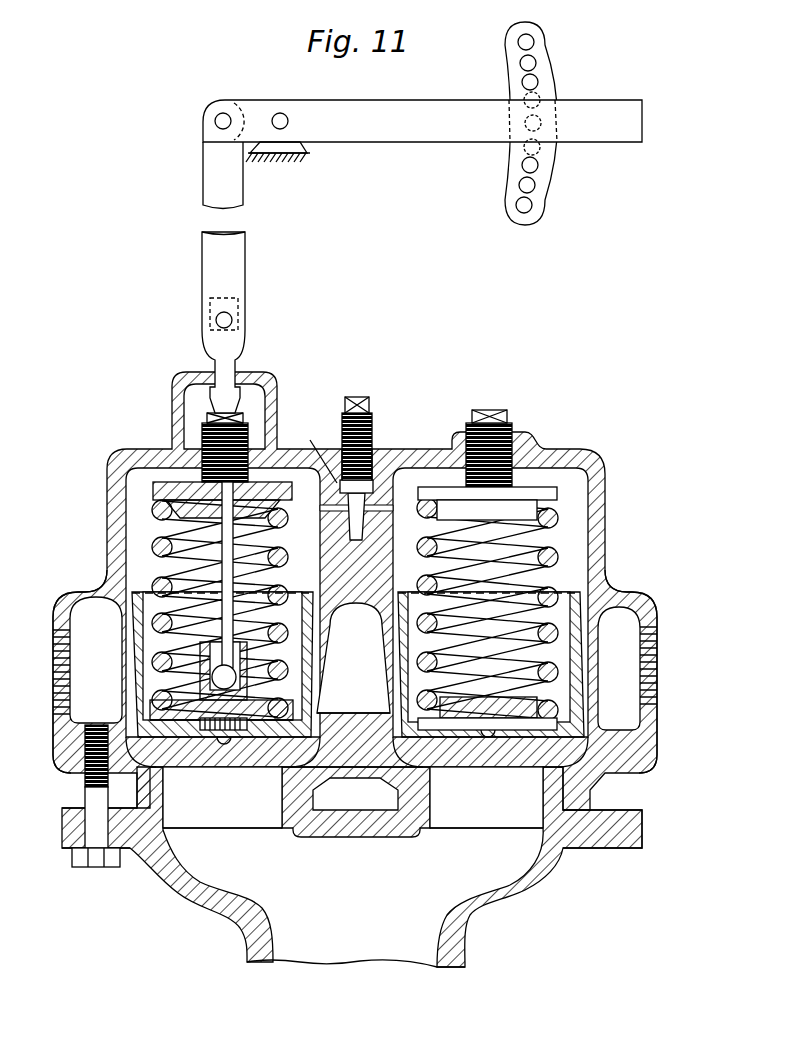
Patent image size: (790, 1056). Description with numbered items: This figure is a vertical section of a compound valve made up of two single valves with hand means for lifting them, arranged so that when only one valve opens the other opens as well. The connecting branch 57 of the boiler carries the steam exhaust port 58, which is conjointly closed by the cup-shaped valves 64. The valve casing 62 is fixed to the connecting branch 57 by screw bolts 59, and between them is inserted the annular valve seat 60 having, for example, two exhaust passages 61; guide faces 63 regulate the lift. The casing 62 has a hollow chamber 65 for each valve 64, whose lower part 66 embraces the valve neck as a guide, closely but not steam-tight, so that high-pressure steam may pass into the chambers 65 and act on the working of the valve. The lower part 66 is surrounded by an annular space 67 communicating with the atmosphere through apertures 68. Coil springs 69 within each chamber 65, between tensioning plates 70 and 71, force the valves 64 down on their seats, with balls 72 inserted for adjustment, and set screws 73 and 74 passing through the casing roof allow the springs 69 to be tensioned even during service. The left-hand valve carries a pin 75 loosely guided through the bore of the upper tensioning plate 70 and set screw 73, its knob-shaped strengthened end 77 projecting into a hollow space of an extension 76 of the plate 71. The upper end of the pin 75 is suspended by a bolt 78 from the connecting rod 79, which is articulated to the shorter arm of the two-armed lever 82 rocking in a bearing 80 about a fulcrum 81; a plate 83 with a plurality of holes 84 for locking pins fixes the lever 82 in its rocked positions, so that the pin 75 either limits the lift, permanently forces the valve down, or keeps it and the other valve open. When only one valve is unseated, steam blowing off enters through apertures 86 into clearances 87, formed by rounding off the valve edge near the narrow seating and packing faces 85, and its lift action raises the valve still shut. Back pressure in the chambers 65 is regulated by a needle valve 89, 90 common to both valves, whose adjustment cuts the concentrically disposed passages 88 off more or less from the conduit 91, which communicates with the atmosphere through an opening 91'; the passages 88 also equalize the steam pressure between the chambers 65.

The connecting branch 57 is at (175, 892).
The steam exhaust port 58 is at (350, 948).
The screw bolts 59 is at (93, 795).
The annular valve seat 60 is at (356, 802).
The exhaust passages 61 is at (255, 820).
The valve casing 62 is at (558, 453).
The guide faces 63 is at (128, 733).
The valves 64 is at (260, 760).
The hollow chamber 65 is at (137, 512).
The lower part 66 is at (133, 652).
The annular space 67 is at (80, 620).
The apertures 68 is at (62, 648).
The coil springs 69 is at (157, 543).
The upper tensioning plate 70 is at (155, 490).
The lower tensioning plate 71 is at (188, 708).
The balls 72 is at (225, 743).
The set screw 73 is at (203, 428).
The set screw 74 is at (512, 423).
The pin 75 is at (221, 568).
The extension 76 is at (187, 680).
The knob-shaped end 77 is at (223, 682).
The bolt 78 is at (233, 320).
The connecting rod 79 is at (235, 187).
The bearing 80 is at (297, 151).
The fulcrum 81 is at (290, 118).
The two-armed lever 82 is at (393, 135).
The plate 83 is at (552, 82).
The holes 84 is at (538, 163).
The seating and packing faces 85 is at (150, 807).
The apertures 86 is at (313, 718).
The clearances 87 is at (302, 763).
The passages 88 is at (322, 508).
The needle valve 89 is at (375, 490).
The needle valve 90 is at (348, 405).
The conduit 91 is at (387, 441).
The opening 91' is at (319, 449).